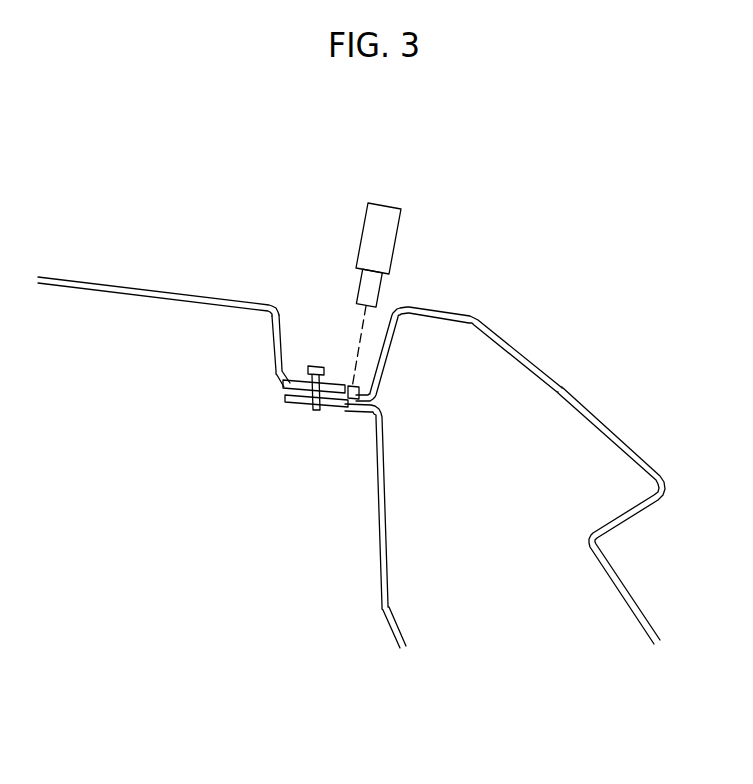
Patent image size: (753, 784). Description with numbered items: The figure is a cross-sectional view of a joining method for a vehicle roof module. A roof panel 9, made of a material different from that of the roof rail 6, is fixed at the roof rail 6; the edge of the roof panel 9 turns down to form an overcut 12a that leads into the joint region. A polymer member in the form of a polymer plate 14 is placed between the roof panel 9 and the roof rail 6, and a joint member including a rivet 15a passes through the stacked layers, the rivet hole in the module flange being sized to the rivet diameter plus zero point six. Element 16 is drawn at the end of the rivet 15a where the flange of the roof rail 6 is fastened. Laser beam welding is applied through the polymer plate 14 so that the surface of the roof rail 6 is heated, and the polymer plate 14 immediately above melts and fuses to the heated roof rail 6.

The roof panel 9 is at (164, 309).
The overcut 12a is at (276, 324).
The polymer plate 14 is at (282, 385).
The rivet 15a is at (310, 390).
The nut 16 is at (353, 386).
The roof rail 6 is at (488, 334).